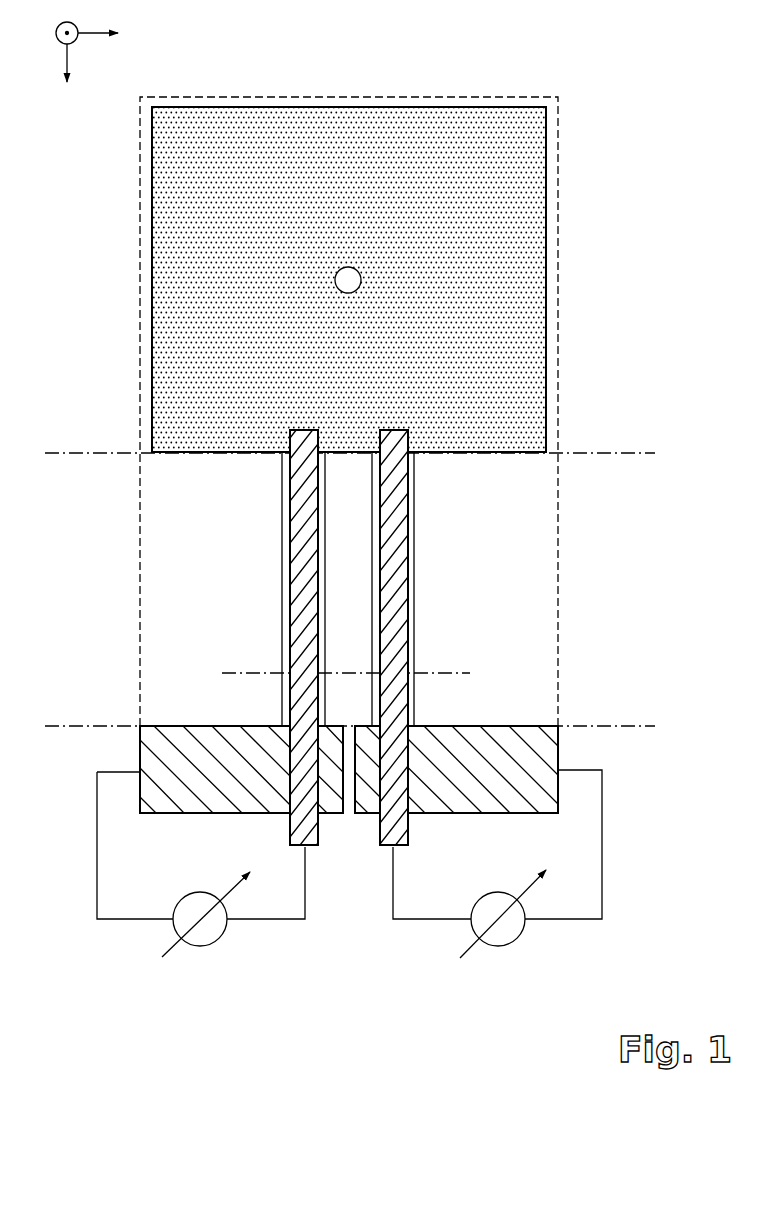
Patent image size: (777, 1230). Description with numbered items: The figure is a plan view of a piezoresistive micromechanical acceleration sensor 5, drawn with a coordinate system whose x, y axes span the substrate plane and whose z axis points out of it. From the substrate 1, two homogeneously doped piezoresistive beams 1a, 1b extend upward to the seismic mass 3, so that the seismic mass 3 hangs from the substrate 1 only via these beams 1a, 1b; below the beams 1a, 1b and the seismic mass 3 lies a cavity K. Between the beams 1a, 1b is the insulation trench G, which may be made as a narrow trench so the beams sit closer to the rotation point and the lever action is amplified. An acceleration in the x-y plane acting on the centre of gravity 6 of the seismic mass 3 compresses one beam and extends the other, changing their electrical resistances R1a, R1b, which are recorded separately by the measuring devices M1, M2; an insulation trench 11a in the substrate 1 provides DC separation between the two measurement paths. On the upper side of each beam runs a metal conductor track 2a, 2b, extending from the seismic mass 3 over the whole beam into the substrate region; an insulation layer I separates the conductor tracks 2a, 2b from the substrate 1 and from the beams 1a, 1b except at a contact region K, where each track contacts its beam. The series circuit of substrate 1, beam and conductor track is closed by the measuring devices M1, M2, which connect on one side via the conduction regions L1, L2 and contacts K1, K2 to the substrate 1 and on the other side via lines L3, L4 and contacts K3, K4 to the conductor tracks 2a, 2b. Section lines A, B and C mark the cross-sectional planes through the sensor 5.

The piezoresistive micromechanical acceleration sensor 5 is at (600, 61).
The seismic mass 3 is at (547, 258).
The centre of gravity 6 is at (338, 280).
The substrate 1 is at (170, 814).
The insulation trench 11a is at (347, 814).
The piezoresistive beam 1a is at (282, 530).
The piezoresistive beam 1b is at (415, 530).
The conductor track 2a is at (305, 571).
The conductor track 2b is at (396, 572).
The contact region K is at (300, 457).
The insulation trench G is at (345, 490).
The insulation layer I is at (290, 822).
The section line A-A' A is at (352, 455).
The section line B-B' B is at (353, 673).
The section line C-C' C is at (352, 727).
The contact K1 is at (138, 770).
The contact 2 K2 is at (560, 769).
The contact K3 is at (303, 850).
The contact K4 is at (395, 850).
The conduction region L1 is at (113, 921).
The conduction region L2 is at (583, 921).
The line L3 is at (287, 921).
The line L4 is at (412, 921).
The resistance of beam 1a R1a is at (206, 914).
The resistance of beam 1b R1b is at (503, 914).
The measuring device M1 is at (200, 946).
The measuring device M2 is at (500, 946).
The x direction x is at (109, 34).
The y direction y is at (66, 78).
The z direction z is at (67, 22).